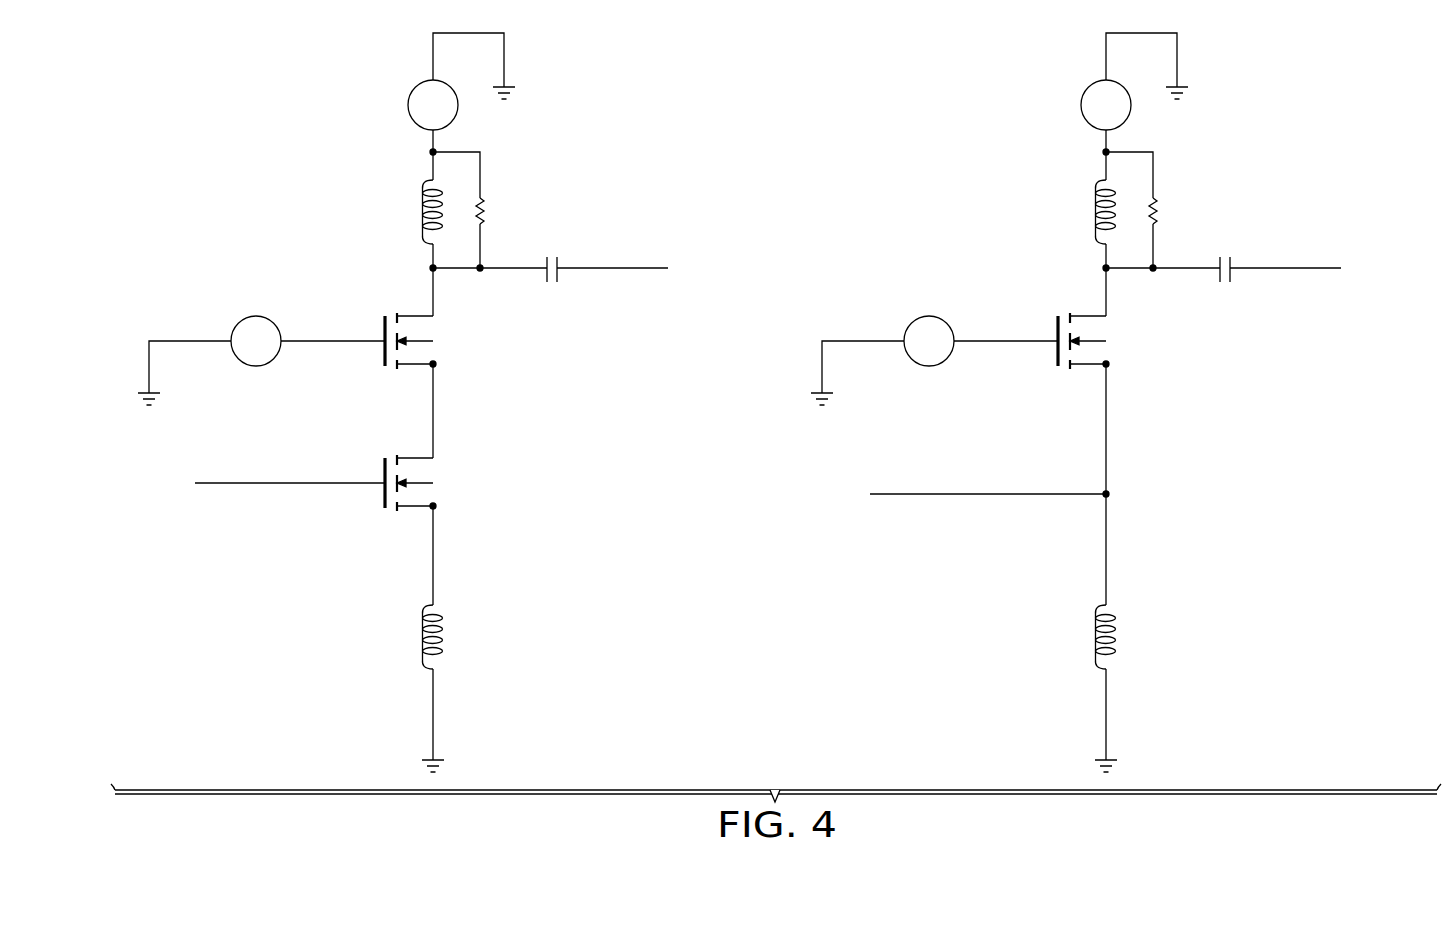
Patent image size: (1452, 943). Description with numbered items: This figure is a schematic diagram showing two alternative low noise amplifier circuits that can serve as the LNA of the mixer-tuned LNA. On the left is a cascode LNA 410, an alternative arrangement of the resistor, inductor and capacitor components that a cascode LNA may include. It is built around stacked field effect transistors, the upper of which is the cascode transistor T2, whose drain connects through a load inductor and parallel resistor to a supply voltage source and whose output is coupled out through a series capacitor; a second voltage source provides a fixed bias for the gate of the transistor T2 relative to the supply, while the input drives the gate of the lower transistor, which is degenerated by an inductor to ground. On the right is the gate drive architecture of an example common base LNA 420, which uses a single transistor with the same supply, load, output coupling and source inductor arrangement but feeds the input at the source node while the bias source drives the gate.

The cascode LNA 410 is at (268, 138).
The common base LNA 420 is at (1343, 138).
The cascode transistor T2 is at (426, 341).